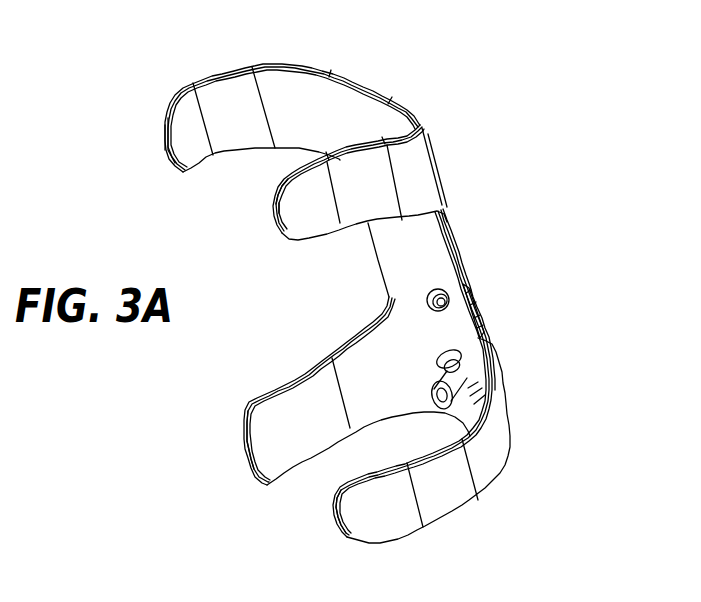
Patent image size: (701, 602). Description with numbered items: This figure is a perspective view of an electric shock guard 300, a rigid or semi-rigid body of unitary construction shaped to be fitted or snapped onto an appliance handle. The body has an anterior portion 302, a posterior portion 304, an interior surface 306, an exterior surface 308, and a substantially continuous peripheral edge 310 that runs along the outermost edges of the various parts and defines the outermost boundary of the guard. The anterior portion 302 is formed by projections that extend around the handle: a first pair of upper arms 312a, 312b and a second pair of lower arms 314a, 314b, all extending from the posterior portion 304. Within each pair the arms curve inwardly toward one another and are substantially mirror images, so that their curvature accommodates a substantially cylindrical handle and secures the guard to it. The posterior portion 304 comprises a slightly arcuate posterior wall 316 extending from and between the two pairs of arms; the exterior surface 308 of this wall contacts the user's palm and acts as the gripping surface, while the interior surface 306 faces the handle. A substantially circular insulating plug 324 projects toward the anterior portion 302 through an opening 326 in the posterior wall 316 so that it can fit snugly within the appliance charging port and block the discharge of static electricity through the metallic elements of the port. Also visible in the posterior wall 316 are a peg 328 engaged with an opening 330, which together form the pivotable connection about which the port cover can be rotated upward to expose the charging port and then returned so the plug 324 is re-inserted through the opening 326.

The electric shock guard 300 is at (530, 75).
The anterior portion 302 is at (129, 64).
The posterior portion 304 is at (507, 230).
The interior surface 306 is at (427, 267).
The exterior surface 308 is at (377, 205).
The peripheral edge 310 is at (292, 372).
The first arm of first pair 312a is at (187, 150).
The second arm of first pair 312b is at (293, 215).
The first arm of second pair 314a is at (268, 443).
The second arm of second pair 314b is at (357, 513).
The posterior wall 316 is at (458, 250).
The plug 324 is at (432, 400).
The opening 326 is at (440, 373).
The peg 328 is at (437, 305).
The opening 330 is at (428, 292).